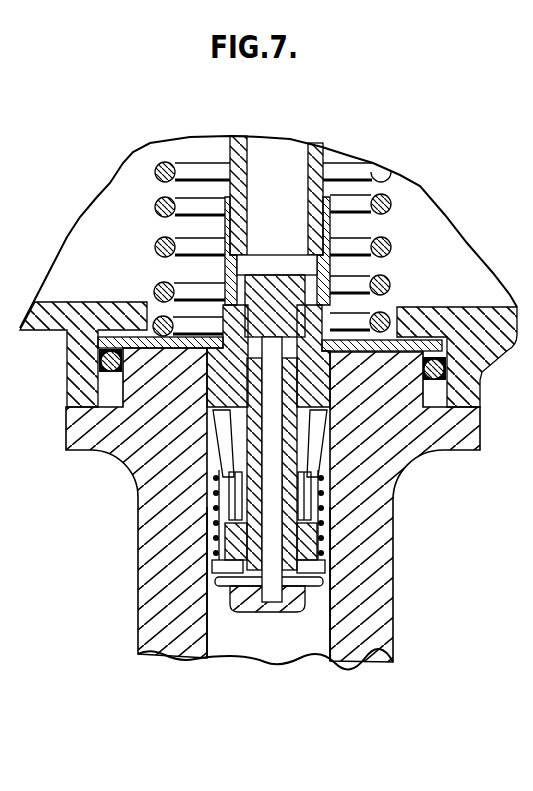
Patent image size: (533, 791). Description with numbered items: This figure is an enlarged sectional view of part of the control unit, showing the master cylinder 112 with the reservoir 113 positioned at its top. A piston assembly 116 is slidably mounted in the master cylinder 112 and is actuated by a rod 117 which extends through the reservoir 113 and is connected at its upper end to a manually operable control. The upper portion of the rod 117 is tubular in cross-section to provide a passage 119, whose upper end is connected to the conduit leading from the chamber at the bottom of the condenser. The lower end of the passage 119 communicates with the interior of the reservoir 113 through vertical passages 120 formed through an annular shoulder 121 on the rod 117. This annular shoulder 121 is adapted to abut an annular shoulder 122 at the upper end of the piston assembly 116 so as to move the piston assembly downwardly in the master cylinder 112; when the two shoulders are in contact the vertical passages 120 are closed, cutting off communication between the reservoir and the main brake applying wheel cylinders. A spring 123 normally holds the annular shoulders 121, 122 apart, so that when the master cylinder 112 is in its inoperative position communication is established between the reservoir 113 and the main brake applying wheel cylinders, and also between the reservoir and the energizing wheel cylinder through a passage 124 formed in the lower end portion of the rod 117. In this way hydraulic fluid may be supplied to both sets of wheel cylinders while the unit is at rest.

The master cylinder 112 is at (145, 627).
The reservoir 113 is at (87, 290).
The piston assembly 116 is at (120, 462).
The rod 117 is at (233, 137).
The passage 119 is at (290, 140).
The vertical passages 120 is at (232, 282).
The annular shoulder 121 is at (262, 256).
The annular shoulder 122 is at (348, 330).
The spring 123 is at (155, 207).
The passage 124 is at (268, 388).